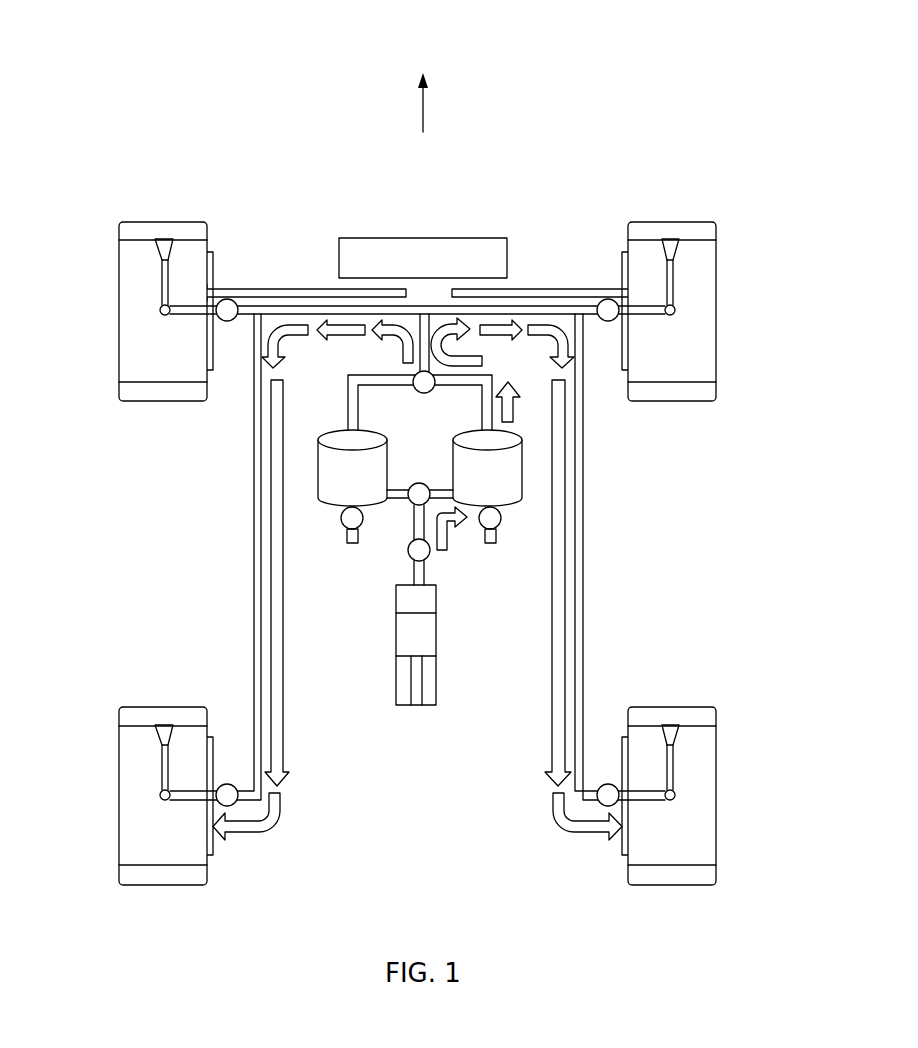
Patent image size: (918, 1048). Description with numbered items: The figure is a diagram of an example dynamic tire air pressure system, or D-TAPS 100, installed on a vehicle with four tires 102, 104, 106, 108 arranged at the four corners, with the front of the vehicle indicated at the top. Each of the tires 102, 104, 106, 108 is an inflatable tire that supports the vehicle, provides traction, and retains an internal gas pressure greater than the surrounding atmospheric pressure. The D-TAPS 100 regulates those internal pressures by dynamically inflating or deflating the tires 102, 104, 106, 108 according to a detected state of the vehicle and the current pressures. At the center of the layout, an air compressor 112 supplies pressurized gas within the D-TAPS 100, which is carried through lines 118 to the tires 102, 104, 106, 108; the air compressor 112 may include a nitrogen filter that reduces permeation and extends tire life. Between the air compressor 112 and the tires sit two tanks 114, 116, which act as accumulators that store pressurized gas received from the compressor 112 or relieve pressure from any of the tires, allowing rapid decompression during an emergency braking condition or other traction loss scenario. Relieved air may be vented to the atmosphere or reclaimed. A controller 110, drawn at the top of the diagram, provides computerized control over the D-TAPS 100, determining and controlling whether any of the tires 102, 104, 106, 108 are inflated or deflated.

The dynamic tire air pressure system (D-TAPS) 100 is at (134, 64).
The tire 102 is at (118, 305).
The tire 104 is at (717, 304).
The tire 106 is at (118, 793).
The tire 108 is at (717, 793).
The controller 110 is at (339, 256).
The air compressor 112 is at (395, 685).
The tank 114 is at (333, 505).
The tank 116 is at (510, 505).
The lines 118 is at (253, 551).